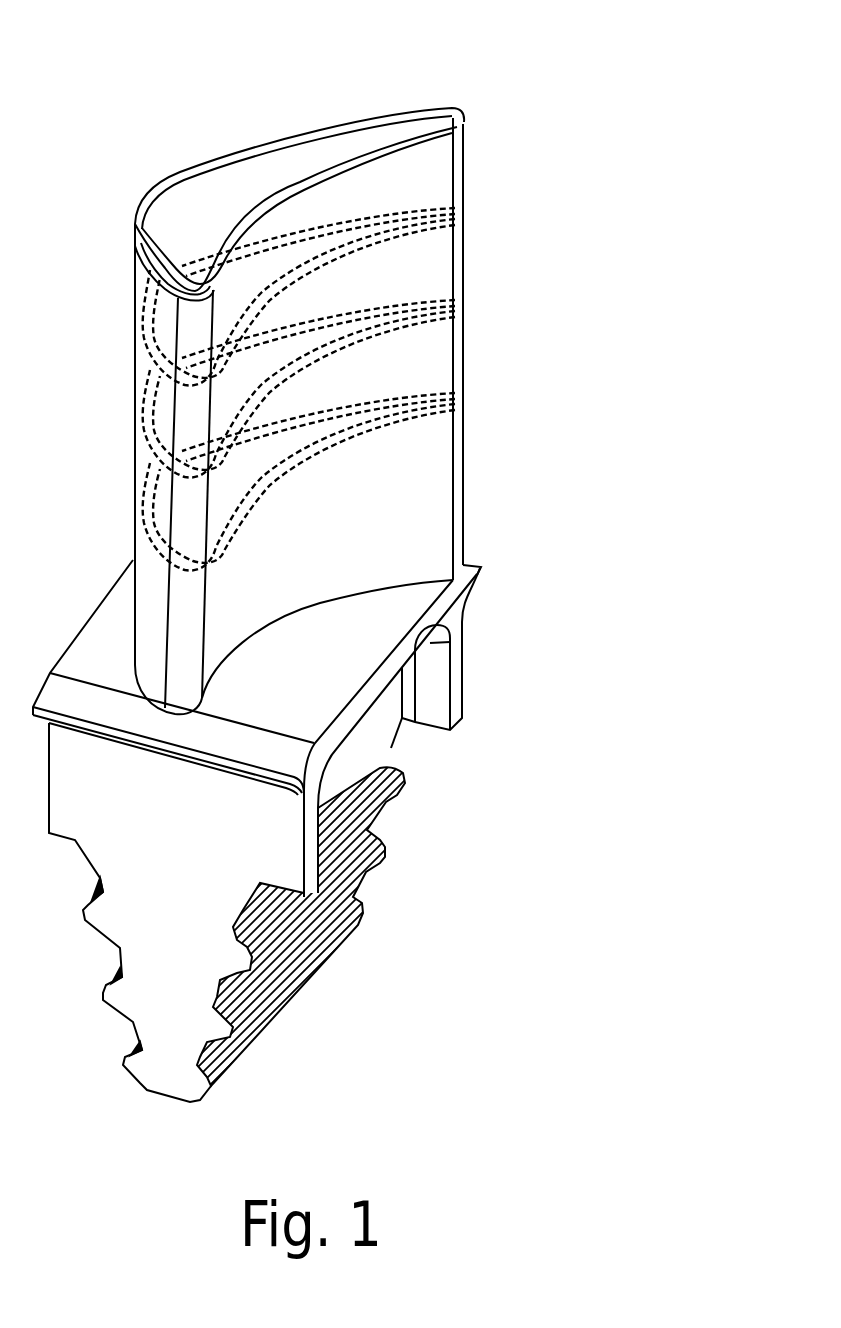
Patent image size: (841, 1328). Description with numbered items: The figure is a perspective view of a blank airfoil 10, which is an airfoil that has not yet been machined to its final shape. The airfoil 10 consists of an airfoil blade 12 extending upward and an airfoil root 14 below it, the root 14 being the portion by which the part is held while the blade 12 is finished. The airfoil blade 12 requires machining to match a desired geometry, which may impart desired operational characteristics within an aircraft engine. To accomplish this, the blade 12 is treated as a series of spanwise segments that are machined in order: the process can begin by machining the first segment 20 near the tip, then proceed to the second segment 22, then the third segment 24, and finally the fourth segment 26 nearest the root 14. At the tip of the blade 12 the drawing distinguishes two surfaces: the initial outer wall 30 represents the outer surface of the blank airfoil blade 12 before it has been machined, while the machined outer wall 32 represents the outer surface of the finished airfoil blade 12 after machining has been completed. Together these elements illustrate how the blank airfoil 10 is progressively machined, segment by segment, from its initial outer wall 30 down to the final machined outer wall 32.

The airfoil 10 is at (641, 72).
The airfoil blade 12 is at (573, 290).
The airfoil root 14 is at (500, 864).
The first segment 20 is at (412, 162).
The second segment 22 is at (412, 258).
The third segment 24 is at (415, 355).
The fourth segment 26 is at (407, 503).
The initial outer wall 30 is at (167, 180).
The machined outer wall 32 is at (258, 149).